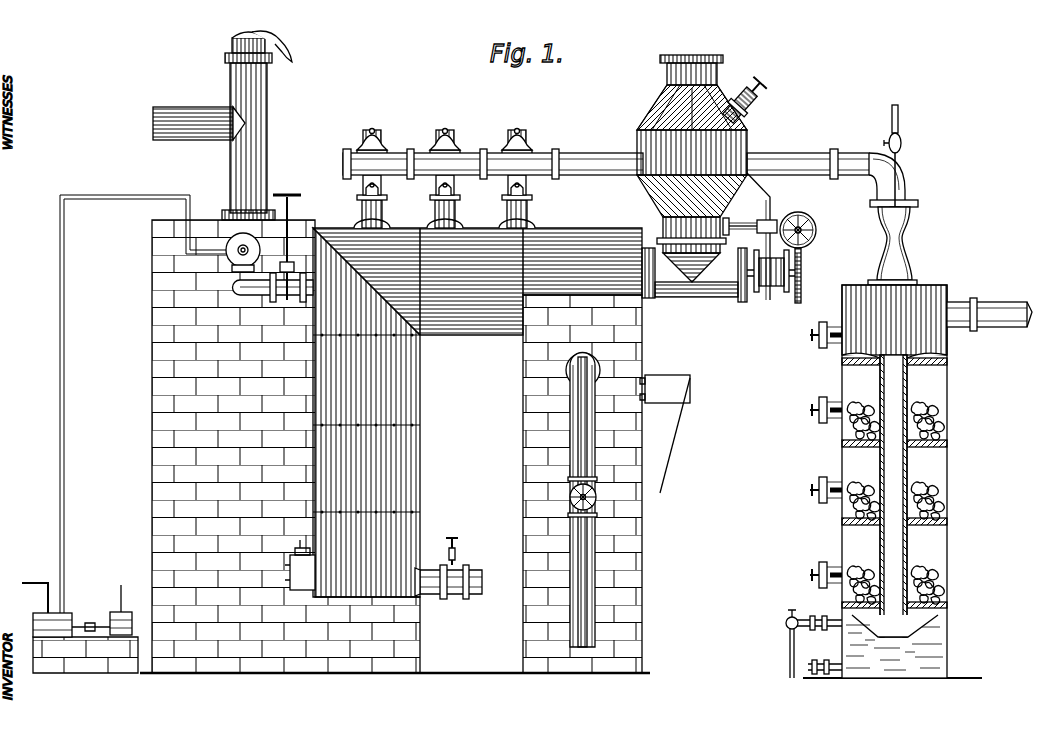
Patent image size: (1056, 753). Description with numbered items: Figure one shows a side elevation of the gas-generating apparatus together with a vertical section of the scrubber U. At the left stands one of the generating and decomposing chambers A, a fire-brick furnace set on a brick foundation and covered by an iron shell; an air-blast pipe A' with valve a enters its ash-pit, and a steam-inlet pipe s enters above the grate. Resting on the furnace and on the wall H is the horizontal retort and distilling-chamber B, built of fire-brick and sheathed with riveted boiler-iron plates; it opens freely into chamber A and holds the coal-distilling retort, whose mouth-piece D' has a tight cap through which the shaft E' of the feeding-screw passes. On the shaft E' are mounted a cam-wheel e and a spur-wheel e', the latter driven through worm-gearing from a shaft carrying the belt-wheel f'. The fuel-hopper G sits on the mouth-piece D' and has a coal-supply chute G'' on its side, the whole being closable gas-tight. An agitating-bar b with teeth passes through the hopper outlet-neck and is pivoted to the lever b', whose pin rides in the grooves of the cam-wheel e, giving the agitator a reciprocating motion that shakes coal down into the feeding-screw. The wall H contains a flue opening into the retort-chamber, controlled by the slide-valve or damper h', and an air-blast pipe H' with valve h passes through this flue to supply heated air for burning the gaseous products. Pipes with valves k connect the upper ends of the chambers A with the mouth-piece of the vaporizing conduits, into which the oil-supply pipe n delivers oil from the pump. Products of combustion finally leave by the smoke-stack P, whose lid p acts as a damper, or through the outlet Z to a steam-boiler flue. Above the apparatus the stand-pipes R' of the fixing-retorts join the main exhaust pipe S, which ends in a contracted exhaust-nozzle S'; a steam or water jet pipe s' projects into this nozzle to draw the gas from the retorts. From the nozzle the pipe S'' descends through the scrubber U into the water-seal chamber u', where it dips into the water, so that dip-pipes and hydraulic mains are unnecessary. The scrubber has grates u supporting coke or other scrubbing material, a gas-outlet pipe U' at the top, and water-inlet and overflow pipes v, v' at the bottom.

The generating and decomposing chamber A is at (366, 412).
The retort and distilling-chamber B is at (484, 268).
The stand-pipe R' is at (444, 179).
The main exhaust pipe S is at (624, 164).
The fuel-hopper G is at (684, 168).
The coal-supply chute G'' is at (753, 100).
The lever b' is at (750, 213).
The agitating-bar b is at (743, 236).
The cam-wheel e is at (761, 270).
The belt-wheel f' is at (806, 249).
The spur-wheel e' is at (809, 273).
The mouth-piece D' is at (701, 291).
The feeding-screw shaft E' is at (771, 290).
The steam-inlet pipe s is at (894, 158).
The exhaust-nozzle S' is at (902, 246).
The scrubber U is at (876, 481).
The dip pipe S'' is at (893, 496).
The grate u is at (920, 499).
The water-seal chamber u' is at (894, 642).
The gas-outlet pipe U' is at (989, 324).
The overflow pipe v' is at (806, 644).
The water-inlet pipe v is at (825, 658).
The smoke-stack P is at (268, 118).
The lid p is at (240, 36).
The outlet Z is at (199, 111).
The oil-supply pipe n is at (146, 404).
The steam or water jet pipe s' is at (270, 297).
The valve k is at (296, 215).
The air-blast pipe A' is at (452, 567).
The valve a is at (444, 551).
The wall H is at (583, 500).
The air-blast pipe H' is at (622, 510).
The slide-valve or damper h' is at (665, 389).
The valve h is at (675, 439).